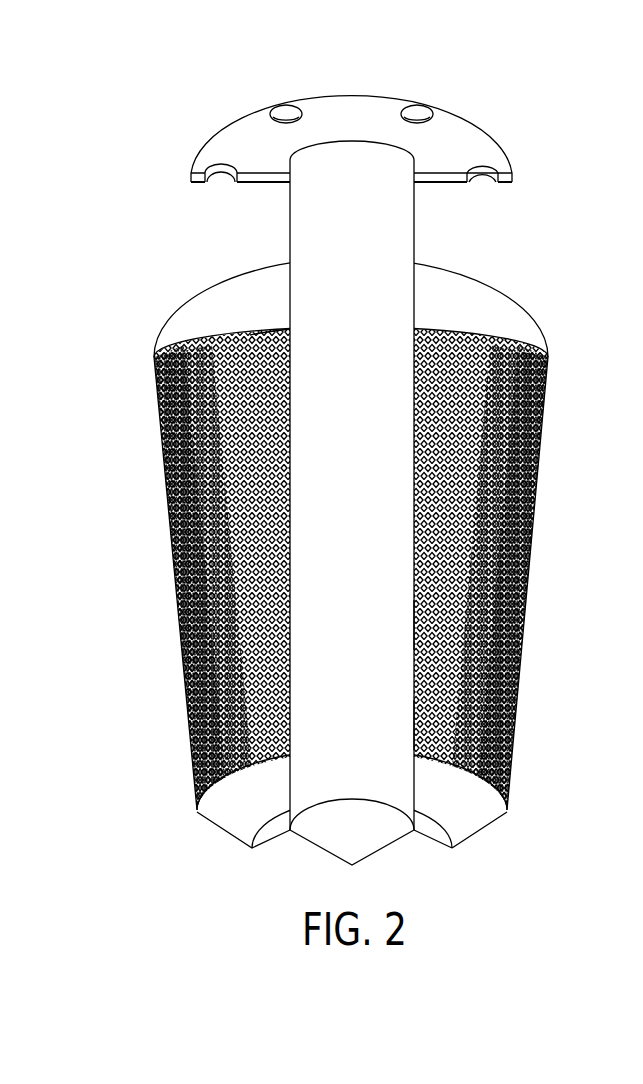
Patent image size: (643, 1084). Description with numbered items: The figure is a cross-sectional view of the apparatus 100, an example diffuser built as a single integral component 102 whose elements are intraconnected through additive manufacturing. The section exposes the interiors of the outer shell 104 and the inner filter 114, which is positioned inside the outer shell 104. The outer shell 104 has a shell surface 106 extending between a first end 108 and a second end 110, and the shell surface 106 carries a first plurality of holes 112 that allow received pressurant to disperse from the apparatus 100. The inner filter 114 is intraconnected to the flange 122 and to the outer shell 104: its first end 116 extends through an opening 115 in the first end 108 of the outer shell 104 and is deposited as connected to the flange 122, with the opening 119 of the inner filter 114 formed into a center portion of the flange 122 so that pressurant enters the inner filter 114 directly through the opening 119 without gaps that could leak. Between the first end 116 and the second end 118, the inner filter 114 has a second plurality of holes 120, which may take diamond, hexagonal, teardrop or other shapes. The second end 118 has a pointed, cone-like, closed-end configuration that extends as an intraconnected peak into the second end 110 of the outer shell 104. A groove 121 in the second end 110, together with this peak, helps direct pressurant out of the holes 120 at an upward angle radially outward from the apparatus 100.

The apparatus 100 is at (346, 468).
The integral component 102 is at (346, 564).
The outer shell 104 is at (197, 472).
The shell surface 106 is at (197, 595).
The first end 108 is at (484, 313).
The second end 110 is at (490, 837).
The first plurality of holes 112 is at (488, 530).
The inner filter 114 is at (418, 627).
The opening 115 is at (288, 323).
The first end 116 is at (403, 466).
The second end 118 is at (315, 857).
The opening 119 is at (349, 147).
The second plurality of holes 120 is at (405, 727).
The groove 121 is at (417, 831).
The flange 122 is at (467, 130).